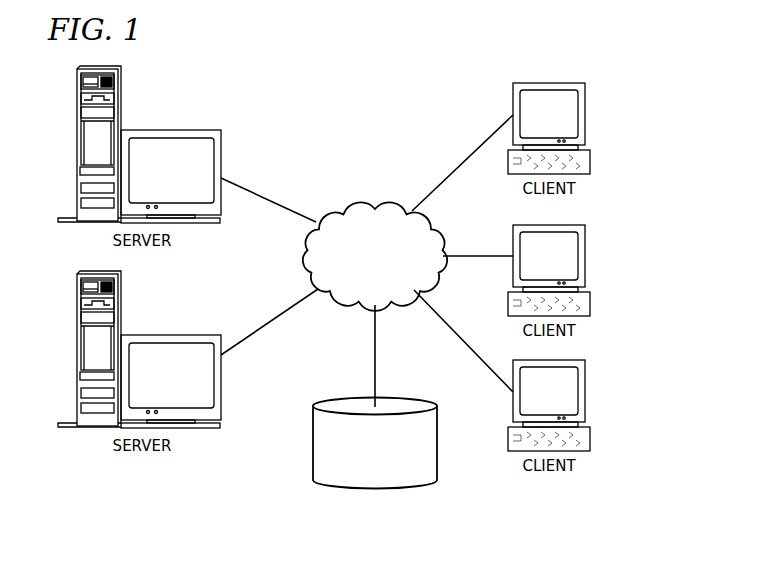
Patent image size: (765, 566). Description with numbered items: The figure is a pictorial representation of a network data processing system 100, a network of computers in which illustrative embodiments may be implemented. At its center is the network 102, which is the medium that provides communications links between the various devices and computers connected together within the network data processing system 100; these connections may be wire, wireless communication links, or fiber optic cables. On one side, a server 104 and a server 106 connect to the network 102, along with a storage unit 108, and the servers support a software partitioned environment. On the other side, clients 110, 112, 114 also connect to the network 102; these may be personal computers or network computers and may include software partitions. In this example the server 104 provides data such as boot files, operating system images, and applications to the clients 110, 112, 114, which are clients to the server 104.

The network data processing system 100 is at (426, 95).
The network 102 is at (348, 206).
The server 104 is at (77, 147).
The server 106 is at (77, 352).
The storage unit 108 is at (360, 490).
The client 110 is at (585, 116).
The client 112 is at (585, 255).
The client 114 is at (585, 392).